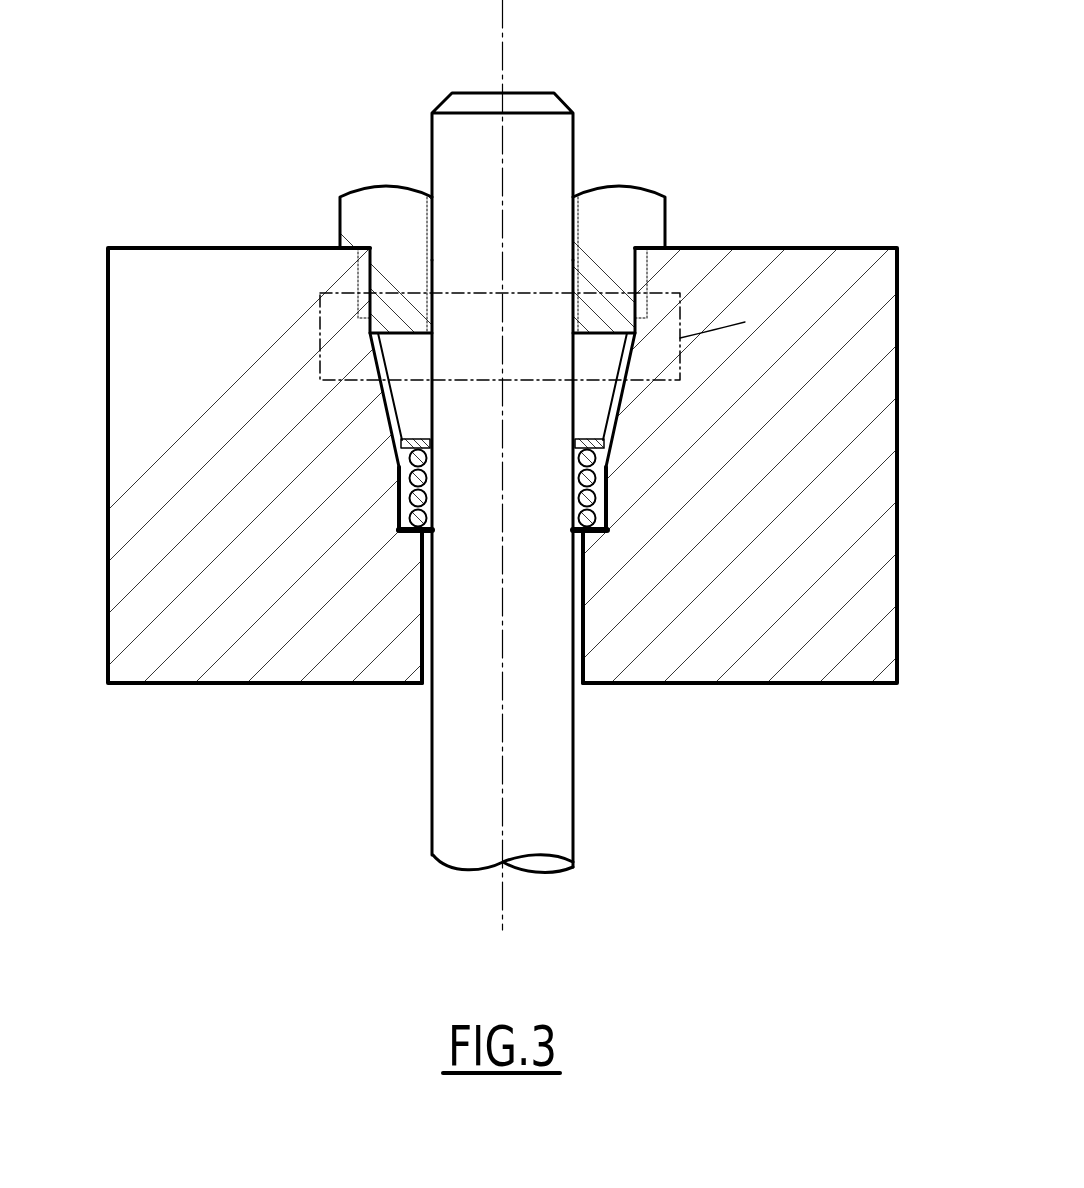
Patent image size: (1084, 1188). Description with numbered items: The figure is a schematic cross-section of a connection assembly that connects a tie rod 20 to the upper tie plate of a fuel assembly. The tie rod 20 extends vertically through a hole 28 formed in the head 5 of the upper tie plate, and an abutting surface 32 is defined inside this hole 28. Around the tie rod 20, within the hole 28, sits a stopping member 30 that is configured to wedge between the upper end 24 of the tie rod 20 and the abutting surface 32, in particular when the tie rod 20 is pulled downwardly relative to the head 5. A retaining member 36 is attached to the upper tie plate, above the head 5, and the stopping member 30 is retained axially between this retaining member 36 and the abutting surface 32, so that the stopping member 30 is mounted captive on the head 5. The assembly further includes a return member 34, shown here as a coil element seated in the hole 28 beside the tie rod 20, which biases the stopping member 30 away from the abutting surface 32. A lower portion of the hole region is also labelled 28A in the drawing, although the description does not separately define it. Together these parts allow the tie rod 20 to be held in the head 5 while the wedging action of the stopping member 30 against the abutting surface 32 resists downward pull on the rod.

The head 5 is at (542, 465).
The tie rod 20 is at (463, 788).
The upper end of the tie rod 24 is at (447, 137).
The hole 28 is at (502, 546).
The sleeve lower end 28A is at (608, 512).
The stopping member 30 is at (412, 403).
The abutting surface 32 is at (380, 355).
The return member 34 is at (410, 497).
The retaining member 36 is at (353, 222).